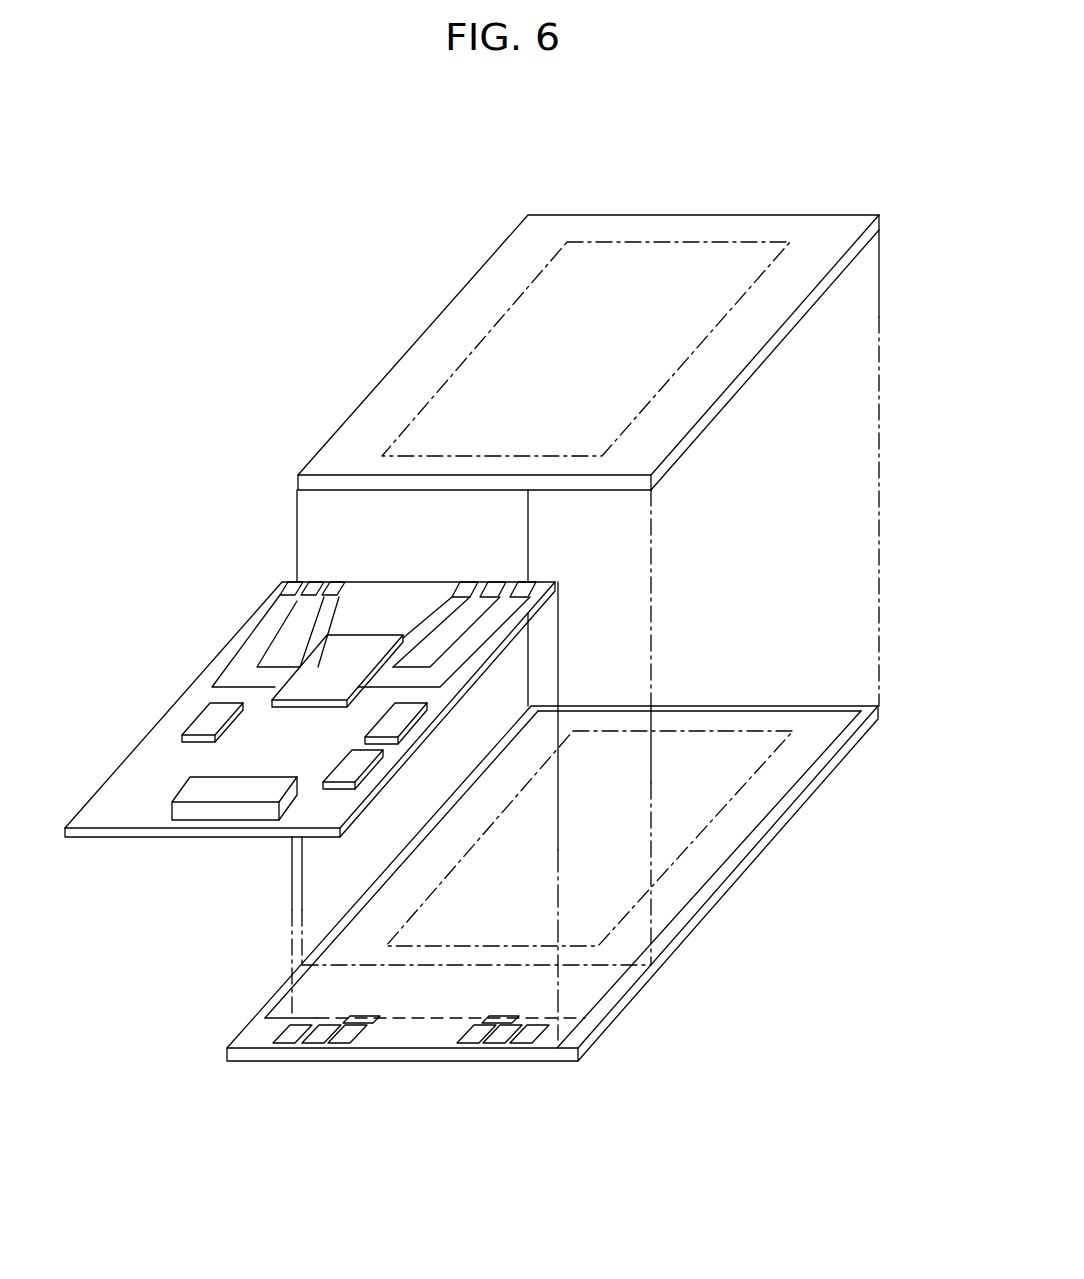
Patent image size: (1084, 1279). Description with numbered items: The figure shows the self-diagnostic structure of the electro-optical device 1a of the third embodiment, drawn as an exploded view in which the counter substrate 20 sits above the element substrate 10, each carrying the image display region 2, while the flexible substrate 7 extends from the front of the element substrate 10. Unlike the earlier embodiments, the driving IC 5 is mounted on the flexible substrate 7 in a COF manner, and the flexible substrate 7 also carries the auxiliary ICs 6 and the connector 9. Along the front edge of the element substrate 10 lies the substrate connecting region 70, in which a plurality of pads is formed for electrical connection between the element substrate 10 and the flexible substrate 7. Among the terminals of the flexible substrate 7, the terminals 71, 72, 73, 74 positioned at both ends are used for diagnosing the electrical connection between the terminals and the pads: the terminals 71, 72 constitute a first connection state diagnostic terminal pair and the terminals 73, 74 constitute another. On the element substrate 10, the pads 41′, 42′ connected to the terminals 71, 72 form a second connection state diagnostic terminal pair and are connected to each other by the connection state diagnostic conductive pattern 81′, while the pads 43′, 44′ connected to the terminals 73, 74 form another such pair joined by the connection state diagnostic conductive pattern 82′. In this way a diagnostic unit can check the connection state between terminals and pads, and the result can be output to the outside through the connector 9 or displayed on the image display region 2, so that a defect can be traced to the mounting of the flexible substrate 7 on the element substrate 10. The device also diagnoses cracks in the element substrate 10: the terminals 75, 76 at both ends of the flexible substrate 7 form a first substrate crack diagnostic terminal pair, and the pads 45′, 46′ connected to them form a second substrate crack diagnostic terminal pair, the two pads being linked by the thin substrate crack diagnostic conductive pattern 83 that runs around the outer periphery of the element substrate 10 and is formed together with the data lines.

The electro-optical device 1a is at (420, 146).
The image display region 2 is at (603, 240).
The counter substrate 20 is at (702, 213).
The element substrate 10 is at (855, 745).
The substrate crack diagnostic conductive pattern 83 is at (793, 800).
The substrate connecting region 70 is at (410, 1045).
The connection state diagnostic conductive pattern 81′ is at (360, 1013).
The connection state diagnostic conductive pattern 82′ is at (500, 1015).
The pad 41′ is at (318, 1047).
The pad 42′ is at (345, 1047).
The pad 43′ is at (497, 1047).
The pad 44′ is at (473, 1047).
The pad 45′ is at (300, 1045).
The pad 46′ is at (530, 1047).
The flexible substrate 7 is at (123, 760).
The terminal 71 is at (267, 602).
The terminal 72 is at (360, 602).
The terminal 73 is at (500, 590).
The terminal 74 is at (460, 590).
The terminal 75 is at (295, 592).
The terminal 76 is at (533, 590).
The driving IC 5 is at (366, 636).
The auxiliary ICs 6 is at (205, 708).
The connector 9 is at (208, 787).